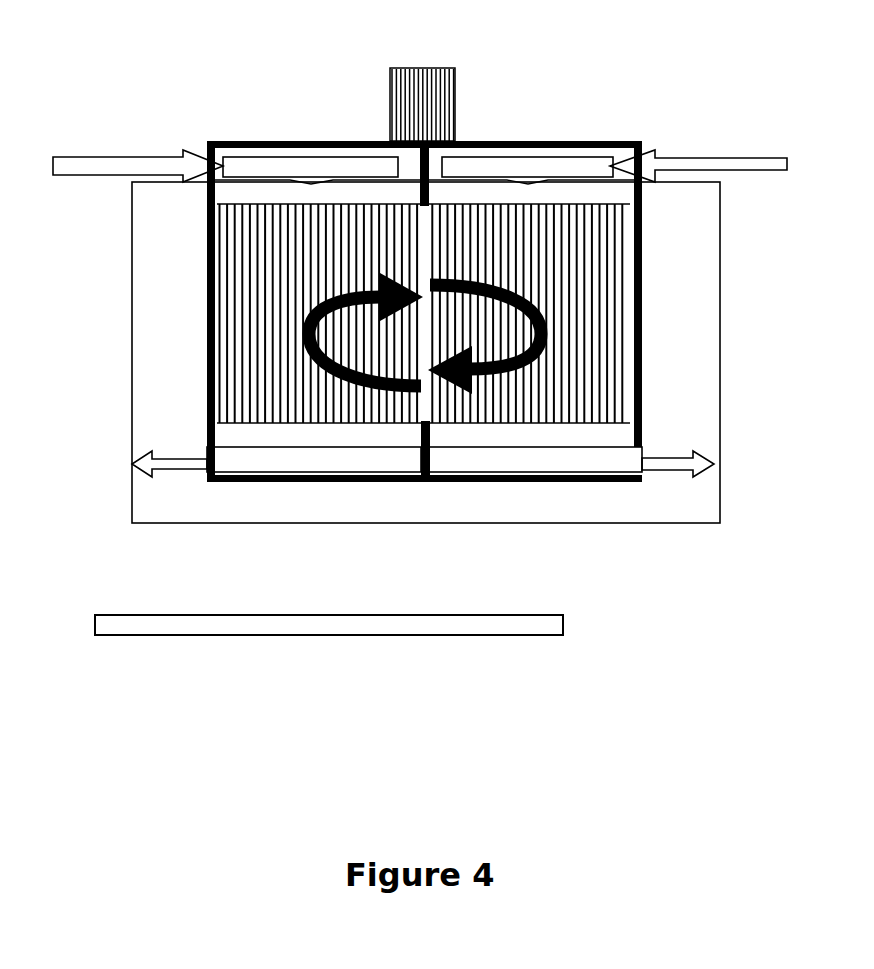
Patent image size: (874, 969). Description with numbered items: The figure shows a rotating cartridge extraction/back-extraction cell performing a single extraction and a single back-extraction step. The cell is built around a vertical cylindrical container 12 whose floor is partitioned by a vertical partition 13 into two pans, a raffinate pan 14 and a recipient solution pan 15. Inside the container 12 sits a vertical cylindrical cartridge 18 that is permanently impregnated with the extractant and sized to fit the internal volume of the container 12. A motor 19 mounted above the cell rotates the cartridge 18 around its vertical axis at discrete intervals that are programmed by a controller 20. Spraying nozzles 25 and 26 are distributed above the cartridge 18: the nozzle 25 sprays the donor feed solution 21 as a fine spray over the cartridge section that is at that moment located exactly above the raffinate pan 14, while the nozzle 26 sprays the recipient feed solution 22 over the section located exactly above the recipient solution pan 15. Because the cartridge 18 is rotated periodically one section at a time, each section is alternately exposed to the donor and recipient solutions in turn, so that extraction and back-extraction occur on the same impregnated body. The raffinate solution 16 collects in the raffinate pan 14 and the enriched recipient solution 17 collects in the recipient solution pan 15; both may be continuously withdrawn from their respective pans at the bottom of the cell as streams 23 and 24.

The vertical cylindrical container 12 is at (193, 328).
The vertical partition 13 is at (415, 451).
The raffinate pan 14 is at (258, 494).
The recipient solution pan 15 is at (571, 497).
The raffinate solution 16 is at (339, 472).
The enriched recipient solution 17 is at (485, 473).
The vertical cylindrical cartridge 18 is at (425, 310).
The motor 19 is at (422, 86).
The controller 20 is at (385, 113).
The donor feed solution 21 is at (138, 148).
The recipient feed solution 22 is at (706, 148).
The raffinate withdrawal stream 23 is at (151, 484).
The enriched recipient withdrawal stream 24 is at (701, 485).
The spraying nozzle 25 is at (295, 162).
The spraying nozzle 26 is at (544, 160).